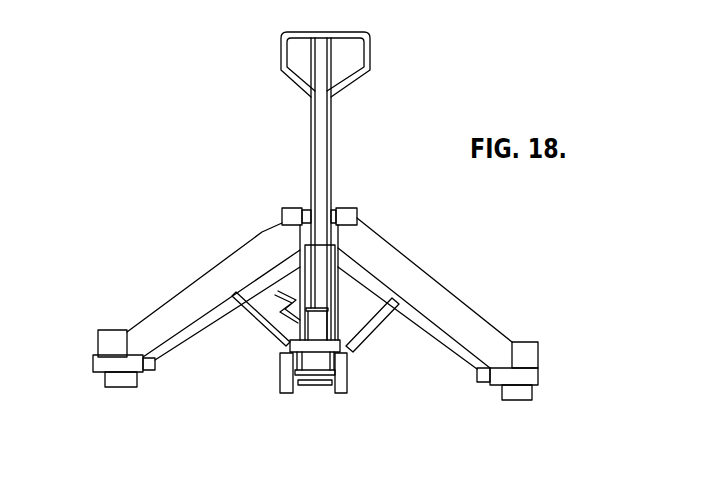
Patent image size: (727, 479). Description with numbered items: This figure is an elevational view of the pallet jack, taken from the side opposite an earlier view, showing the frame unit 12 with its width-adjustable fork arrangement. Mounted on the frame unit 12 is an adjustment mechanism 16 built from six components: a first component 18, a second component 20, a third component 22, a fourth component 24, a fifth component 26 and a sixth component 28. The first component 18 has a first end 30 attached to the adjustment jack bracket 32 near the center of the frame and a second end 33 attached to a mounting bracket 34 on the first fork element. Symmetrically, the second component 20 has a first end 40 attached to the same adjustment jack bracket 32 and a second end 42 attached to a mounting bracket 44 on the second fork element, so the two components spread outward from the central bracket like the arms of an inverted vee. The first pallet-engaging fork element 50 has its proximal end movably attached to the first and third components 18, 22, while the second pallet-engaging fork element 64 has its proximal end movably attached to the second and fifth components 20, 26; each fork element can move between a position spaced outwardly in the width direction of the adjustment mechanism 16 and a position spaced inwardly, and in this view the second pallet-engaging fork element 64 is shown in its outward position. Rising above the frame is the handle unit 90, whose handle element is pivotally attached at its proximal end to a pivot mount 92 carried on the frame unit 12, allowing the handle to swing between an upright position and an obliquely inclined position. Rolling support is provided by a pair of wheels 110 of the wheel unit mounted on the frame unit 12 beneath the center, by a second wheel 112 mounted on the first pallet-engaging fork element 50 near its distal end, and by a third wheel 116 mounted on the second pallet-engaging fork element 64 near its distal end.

The frame unit 12 is at (446, 286).
The adjustment mechanism 16 is at (203, 269).
The first component 18 is at (416, 265).
The second component 20 is at (193, 280).
The third component 22 is at (437, 340).
The fourth component 24 is at (372, 330).
The fifth component 26 is at (187, 341).
The sixth component 28 is at (247, 314).
The first end 30 is at (363, 231).
The adjustment jack bracket 32 is at (348, 211).
The second end 33 is at (508, 328).
The mounting bracket 34 is at (532, 352).
The first end 40 is at (263, 231).
The second end 42 is at (132, 322).
The mounting bracket 44 is at (100, 338).
The first pallet-engaging fork element 50 is at (93, 363).
The second pallet-engaging fork element 64 is at (539, 378).
The handle unit 90 is at (388, 119).
The pivot mount 92 is at (268, 357).
The pair of wheels 110 is at (287, 393).
The second wheel 112 is at (114, 388).
The third wheel 116 is at (513, 403).